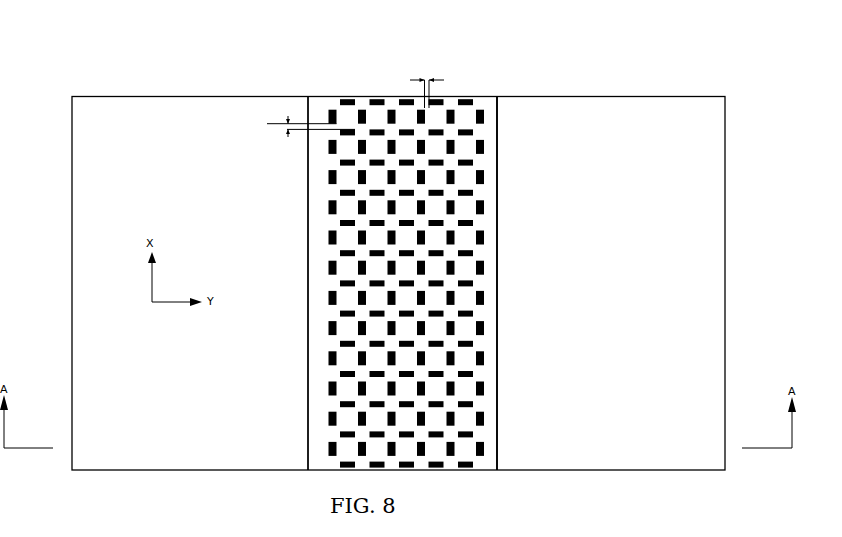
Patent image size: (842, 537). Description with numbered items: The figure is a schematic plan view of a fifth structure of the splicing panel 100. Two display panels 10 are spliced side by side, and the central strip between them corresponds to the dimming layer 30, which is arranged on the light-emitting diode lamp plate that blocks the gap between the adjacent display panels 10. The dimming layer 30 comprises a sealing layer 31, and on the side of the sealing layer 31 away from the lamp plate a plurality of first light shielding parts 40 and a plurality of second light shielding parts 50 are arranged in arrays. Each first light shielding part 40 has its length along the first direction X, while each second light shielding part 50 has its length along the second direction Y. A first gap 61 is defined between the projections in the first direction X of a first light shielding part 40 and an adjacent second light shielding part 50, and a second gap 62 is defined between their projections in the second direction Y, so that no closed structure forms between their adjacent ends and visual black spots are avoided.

The splicing panel 100 is at (223, 78).
The display panel 10 is at (137, 130).
The dimming layer 30 is at (480, 102).
The sealing layer 31 is at (513, 255).
The first light shielding part 40 is at (333, 109).
The second light shielding part 50 is at (380, 97).
The first gap 61 is at (287, 127).
The second gap 62 is at (424, 80).